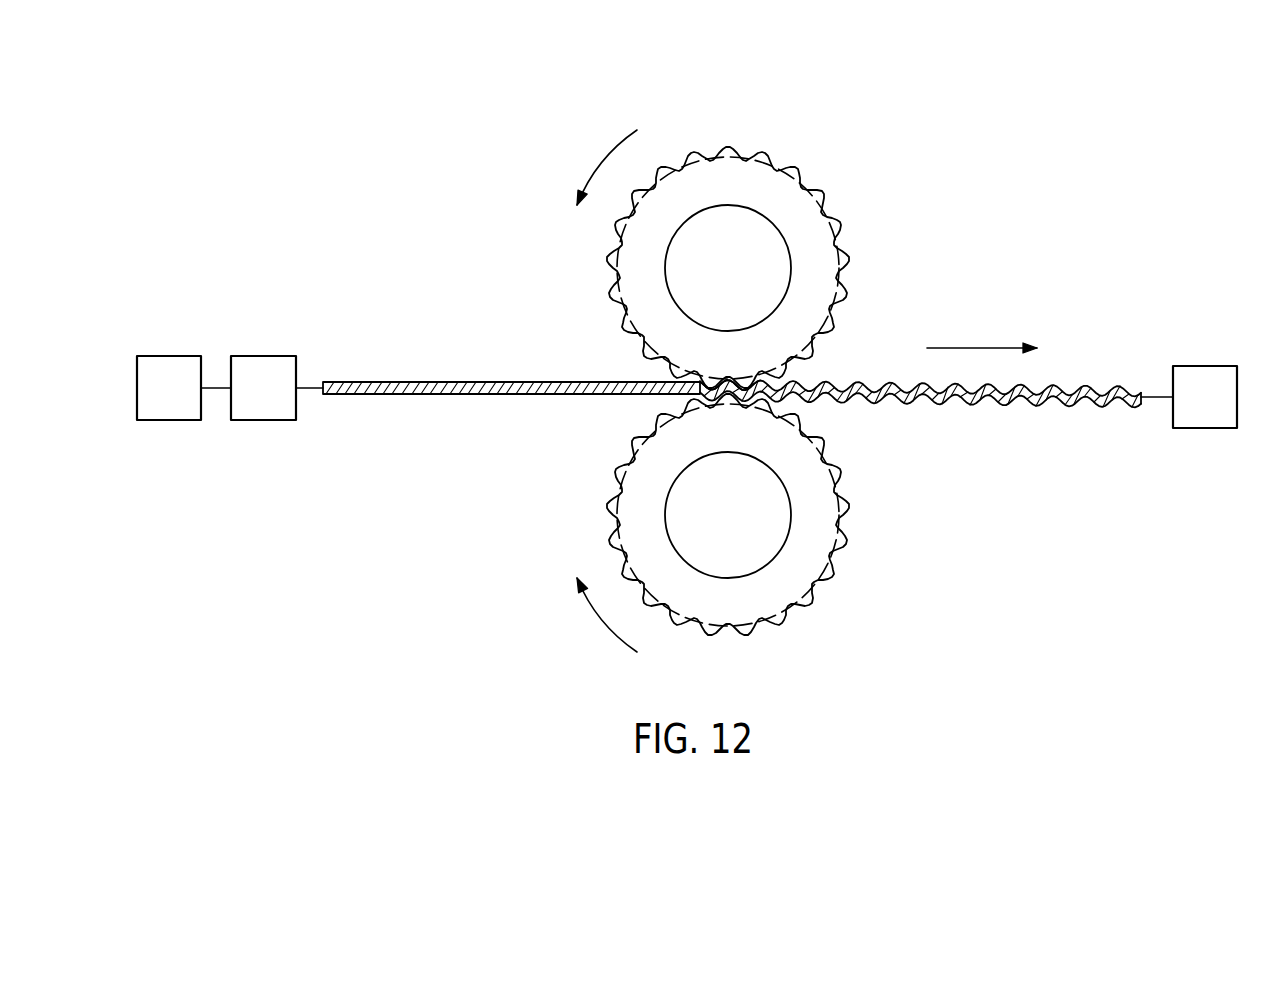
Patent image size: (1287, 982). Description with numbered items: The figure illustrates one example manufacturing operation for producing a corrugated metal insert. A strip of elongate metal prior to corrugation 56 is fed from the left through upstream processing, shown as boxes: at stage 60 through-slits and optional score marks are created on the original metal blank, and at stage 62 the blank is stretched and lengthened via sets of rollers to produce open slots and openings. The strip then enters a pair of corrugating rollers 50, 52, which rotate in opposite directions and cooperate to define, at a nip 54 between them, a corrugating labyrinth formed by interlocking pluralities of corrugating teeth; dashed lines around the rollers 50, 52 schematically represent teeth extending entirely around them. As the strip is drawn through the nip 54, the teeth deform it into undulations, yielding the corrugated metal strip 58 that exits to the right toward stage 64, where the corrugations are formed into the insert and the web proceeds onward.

The corrugating roller 50 is at (787, 203).
The corrugating roller 52 is at (795, 572).
The nip 54 is at (800, 373).
The strip of elongate metal prior to corrugation 56 is at (440, 363).
The corrugated metal strip 58 is at (1060, 417).
The stage 60 is at (172, 356).
The stage 62 is at (265, 356).
The stage 64 is at (767, 117).